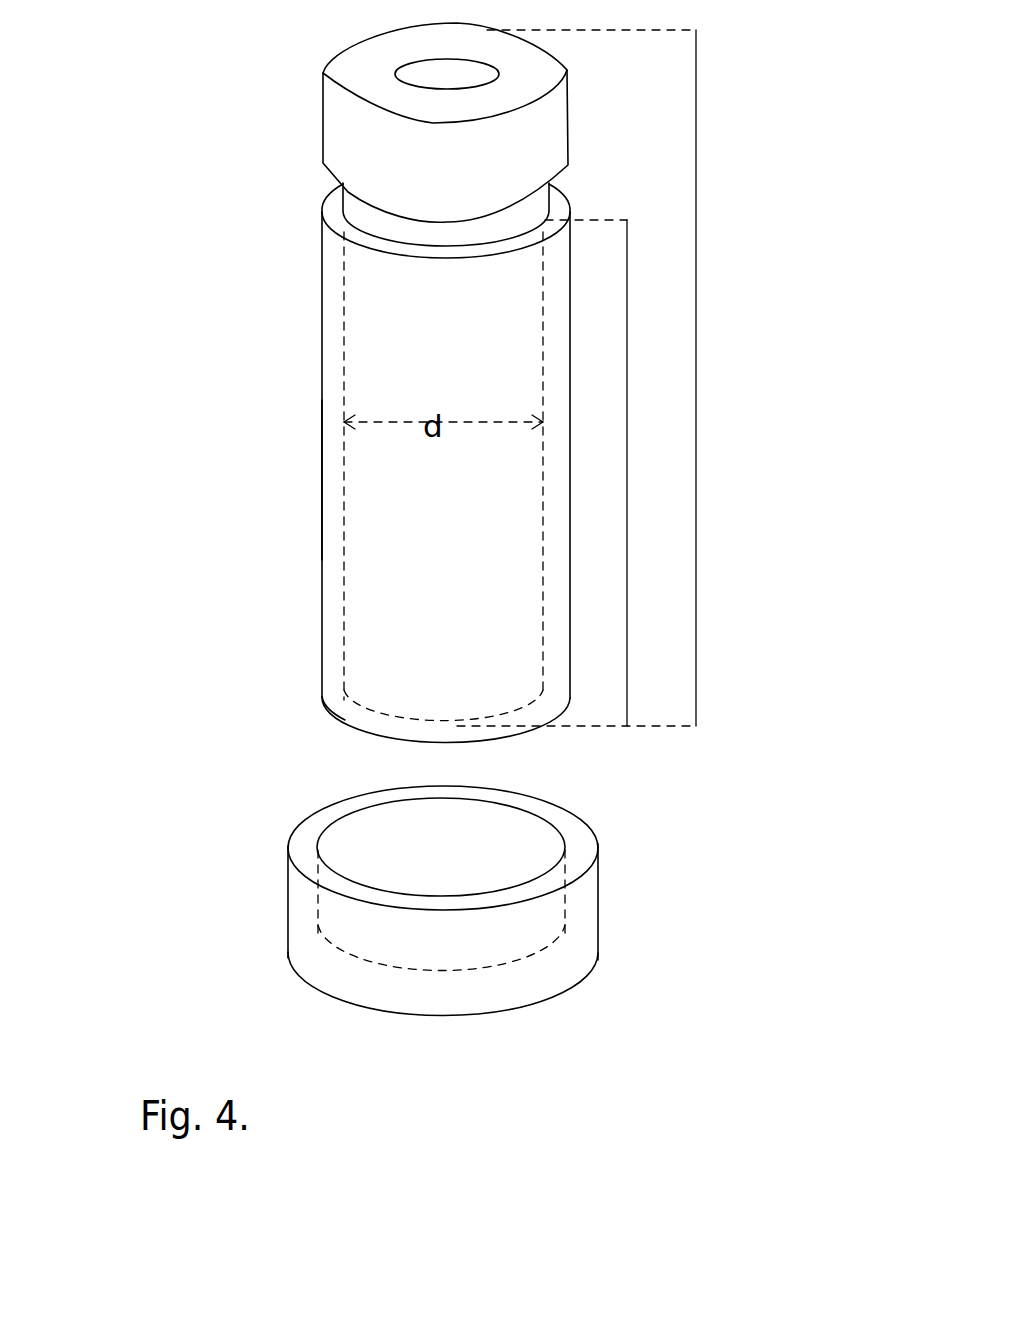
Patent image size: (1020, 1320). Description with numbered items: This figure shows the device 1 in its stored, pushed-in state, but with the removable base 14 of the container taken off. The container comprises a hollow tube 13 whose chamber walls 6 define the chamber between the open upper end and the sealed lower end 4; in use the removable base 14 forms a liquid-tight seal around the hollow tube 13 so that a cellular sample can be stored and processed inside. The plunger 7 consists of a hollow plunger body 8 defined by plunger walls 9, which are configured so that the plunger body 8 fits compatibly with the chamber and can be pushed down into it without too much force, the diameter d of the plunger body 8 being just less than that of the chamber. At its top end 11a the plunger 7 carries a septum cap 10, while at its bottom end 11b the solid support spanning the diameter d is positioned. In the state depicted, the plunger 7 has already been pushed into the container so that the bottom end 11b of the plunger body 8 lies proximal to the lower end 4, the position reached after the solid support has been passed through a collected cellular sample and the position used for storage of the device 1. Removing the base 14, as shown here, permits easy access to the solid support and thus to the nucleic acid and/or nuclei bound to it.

The device 1 is at (175, 453).
The sealed lower end 4 is at (338, 996).
The chamber walls 6 is at (336, 650).
The plunger 7 is at (697, 342).
The plunger body 8 is at (627, 473).
The plunger walls 9 is at (330, 331).
The septum cap 10 is at (377, 142).
The top end 11a is at (353, 206).
The bottom end 11b is at (363, 712).
The hollow tube 13 is at (320, 550).
The removable base 14 is at (307, 896).